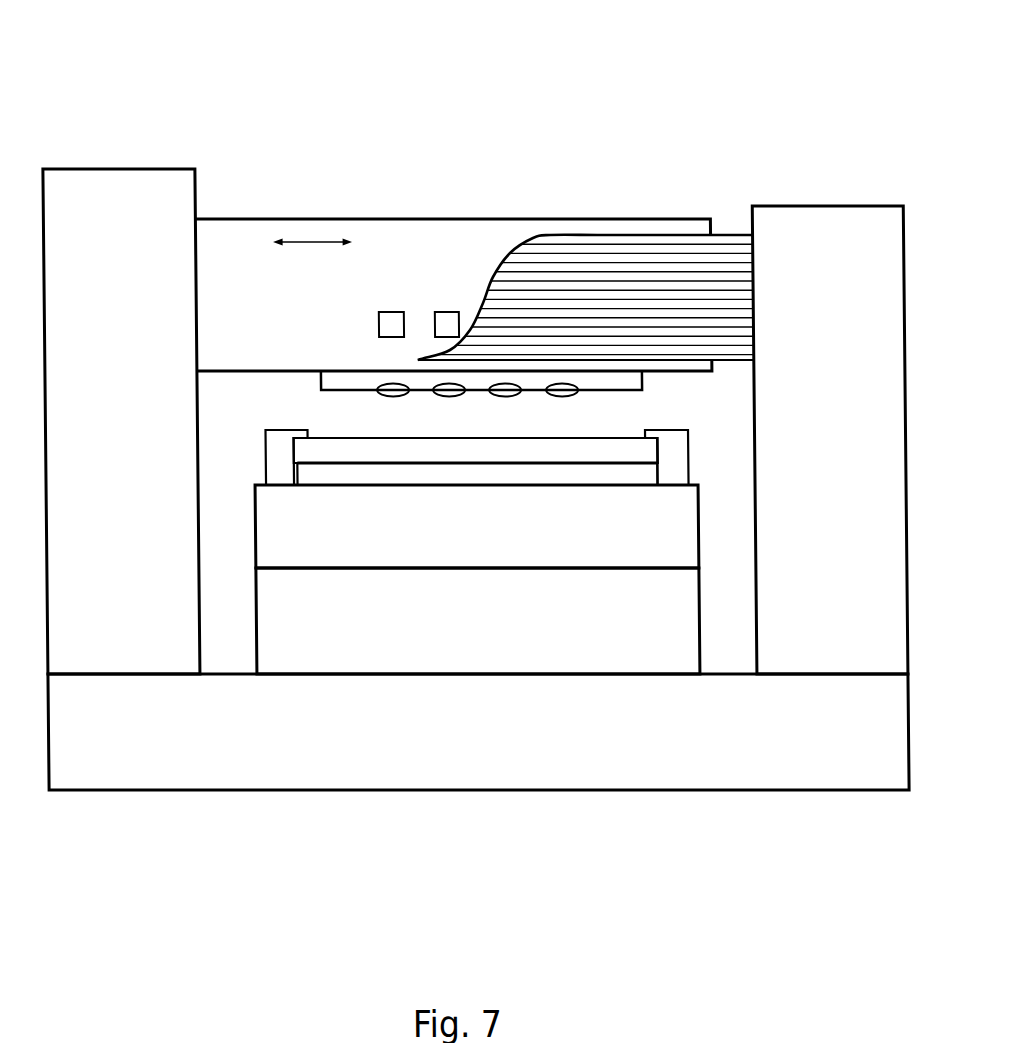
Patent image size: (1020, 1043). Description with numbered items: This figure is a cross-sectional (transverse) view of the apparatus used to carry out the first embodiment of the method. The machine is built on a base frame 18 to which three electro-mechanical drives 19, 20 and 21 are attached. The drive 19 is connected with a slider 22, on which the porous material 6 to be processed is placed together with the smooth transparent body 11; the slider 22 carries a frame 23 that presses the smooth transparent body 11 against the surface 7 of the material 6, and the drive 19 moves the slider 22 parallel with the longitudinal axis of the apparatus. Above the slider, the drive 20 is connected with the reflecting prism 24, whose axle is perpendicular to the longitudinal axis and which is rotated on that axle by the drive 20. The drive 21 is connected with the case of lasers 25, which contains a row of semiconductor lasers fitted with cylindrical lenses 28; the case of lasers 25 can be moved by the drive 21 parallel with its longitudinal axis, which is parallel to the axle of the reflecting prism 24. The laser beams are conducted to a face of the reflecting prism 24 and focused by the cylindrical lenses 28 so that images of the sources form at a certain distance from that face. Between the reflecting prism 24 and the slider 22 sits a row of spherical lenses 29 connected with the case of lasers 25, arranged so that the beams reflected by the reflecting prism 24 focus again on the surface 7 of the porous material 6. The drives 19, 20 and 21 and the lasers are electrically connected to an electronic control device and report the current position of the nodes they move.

The porous material 6 is at (548, 475).
The surface of the material 7 is at (442, 465).
The smooth transparent body 11 is at (362, 453).
The base frame 18 is at (129, 758).
The electro-mechanical drive 19 is at (386, 655).
The electro-mechanical drive 20 is at (810, 252).
The electro-mechanical drive 21 is at (97, 245).
The slider 22 is at (547, 550).
The frame 23 is at (683, 440).
The reflecting prism 24 is at (624, 263).
The case of lasers 25 is at (395, 243).
The cylindrical lens 28 is at (390, 322).
The spherical lenses 29 is at (566, 397).